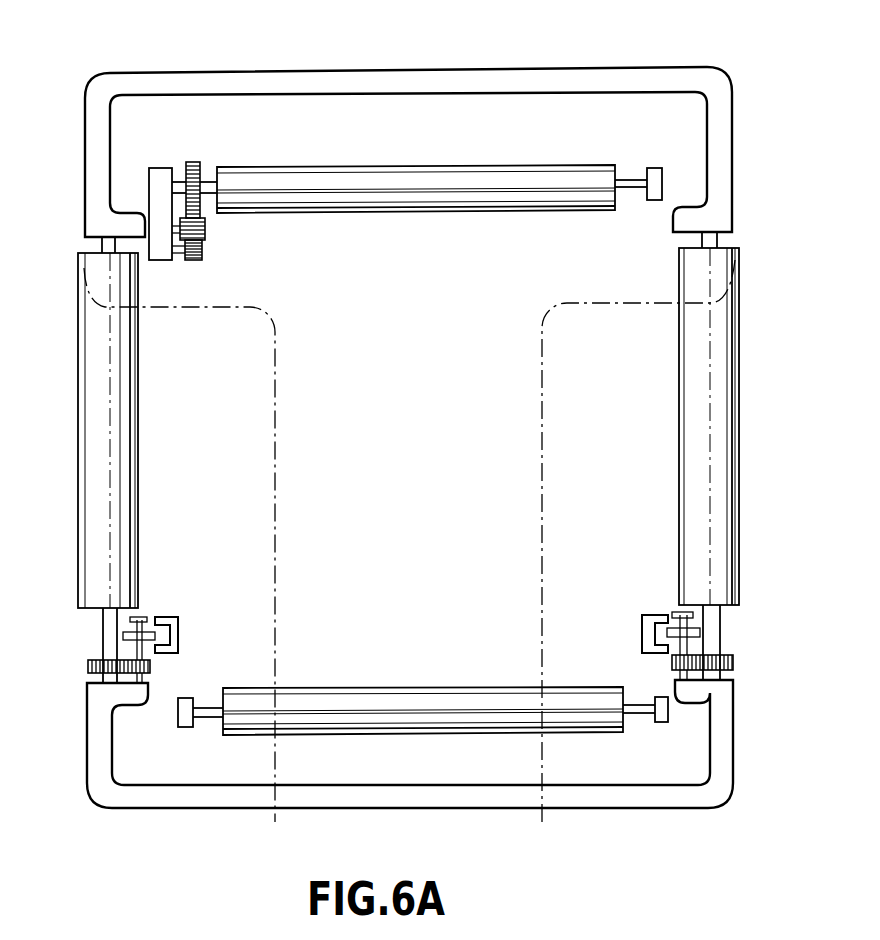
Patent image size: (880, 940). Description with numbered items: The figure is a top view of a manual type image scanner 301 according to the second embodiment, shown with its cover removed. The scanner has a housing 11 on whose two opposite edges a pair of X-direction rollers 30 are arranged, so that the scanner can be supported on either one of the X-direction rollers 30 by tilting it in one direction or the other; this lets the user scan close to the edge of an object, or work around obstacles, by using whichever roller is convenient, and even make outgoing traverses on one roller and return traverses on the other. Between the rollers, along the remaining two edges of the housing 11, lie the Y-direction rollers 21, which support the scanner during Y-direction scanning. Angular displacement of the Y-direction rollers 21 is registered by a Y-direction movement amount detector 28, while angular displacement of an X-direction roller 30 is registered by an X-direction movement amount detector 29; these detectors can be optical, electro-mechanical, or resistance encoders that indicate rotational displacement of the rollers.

The manual type image scanner 301 is at (352, 57).
The housing 11 is at (718, 135).
The Y-direction rollers 21 is at (547, 178).
The Y-direction movement amount detector 28 is at (184, 262).
The X-direction movement amount detector 29 is at (167, 660).
The X-direction rollers 30 is at (97, 430).